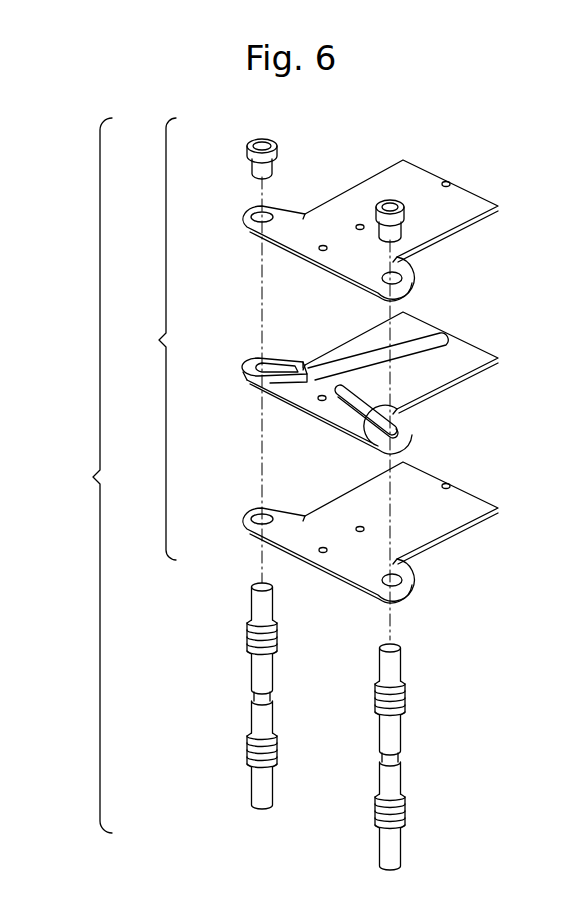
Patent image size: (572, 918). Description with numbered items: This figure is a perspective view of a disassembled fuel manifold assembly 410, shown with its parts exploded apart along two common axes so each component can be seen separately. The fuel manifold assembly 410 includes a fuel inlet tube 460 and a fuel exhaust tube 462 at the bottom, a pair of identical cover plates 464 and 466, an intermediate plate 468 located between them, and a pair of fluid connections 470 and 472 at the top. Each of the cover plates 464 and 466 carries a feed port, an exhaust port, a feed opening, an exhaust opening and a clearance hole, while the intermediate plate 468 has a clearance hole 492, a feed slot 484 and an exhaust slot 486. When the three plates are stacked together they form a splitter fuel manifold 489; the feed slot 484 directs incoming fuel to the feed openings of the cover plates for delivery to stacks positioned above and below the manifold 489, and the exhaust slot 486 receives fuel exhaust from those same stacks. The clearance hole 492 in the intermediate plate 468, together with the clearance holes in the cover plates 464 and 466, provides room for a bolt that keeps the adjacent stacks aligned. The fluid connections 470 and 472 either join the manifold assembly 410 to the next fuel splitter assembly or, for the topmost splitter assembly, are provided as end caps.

The fuel manifold assembly 410 is at (83, 475).
The splitter fuel manifold 489 is at (148, 339).
The fuel inlet tube 460 is at (255, 786).
The fuel exhaust tube 462 is at (382, 848).
The cover plate 464 is at (361, 530).
The cover plate 466 is at (361, 228).
The intermediate plate 468 is at (386, 389).
The fluid connection 470 is at (248, 150).
The fluid connection 472 is at (389, 204).
The feed slot 484 is at (278, 371).
The exhaust slot 486 is at (400, 428).
The clearance hole 492 is at (322, 402).